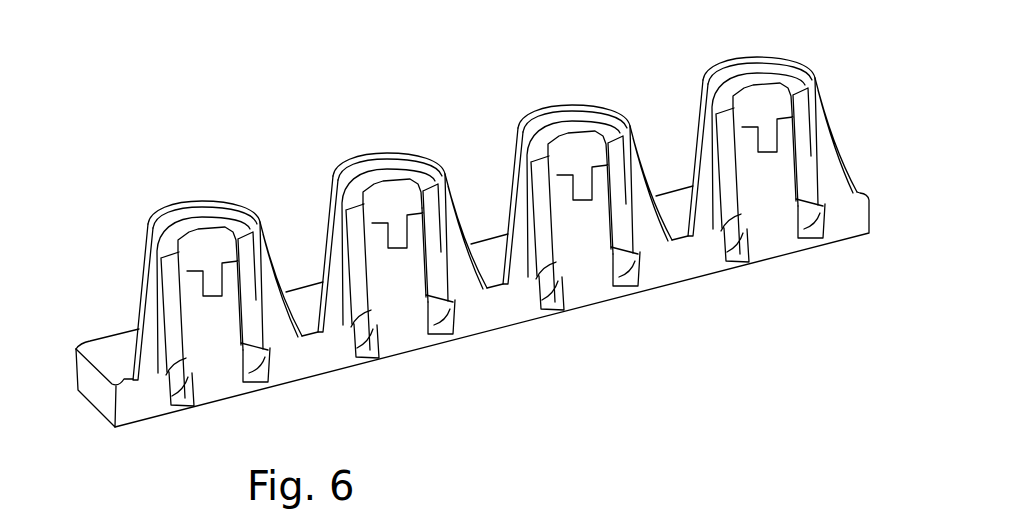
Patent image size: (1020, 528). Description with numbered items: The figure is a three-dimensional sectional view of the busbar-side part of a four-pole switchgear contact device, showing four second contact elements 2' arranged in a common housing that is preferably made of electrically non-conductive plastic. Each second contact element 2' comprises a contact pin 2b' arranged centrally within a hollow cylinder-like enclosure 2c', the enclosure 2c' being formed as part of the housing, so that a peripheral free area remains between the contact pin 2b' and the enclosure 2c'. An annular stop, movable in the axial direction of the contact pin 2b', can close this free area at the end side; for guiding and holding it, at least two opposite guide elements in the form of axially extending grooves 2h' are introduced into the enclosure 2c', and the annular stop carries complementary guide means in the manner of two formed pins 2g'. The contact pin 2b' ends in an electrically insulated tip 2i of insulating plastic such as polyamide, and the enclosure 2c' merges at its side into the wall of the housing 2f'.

The second contact element 2' is at (472, 306).
The formed pin 2g' is at (207, 261).
The groove 2h' is at (284, 274).
The enclosure 2c' is at (470, 181).
The contact head 2i is at (383, 180).
The contact pin 2b' is at (511, 227).
The end flange 2f' is at (843, 135).